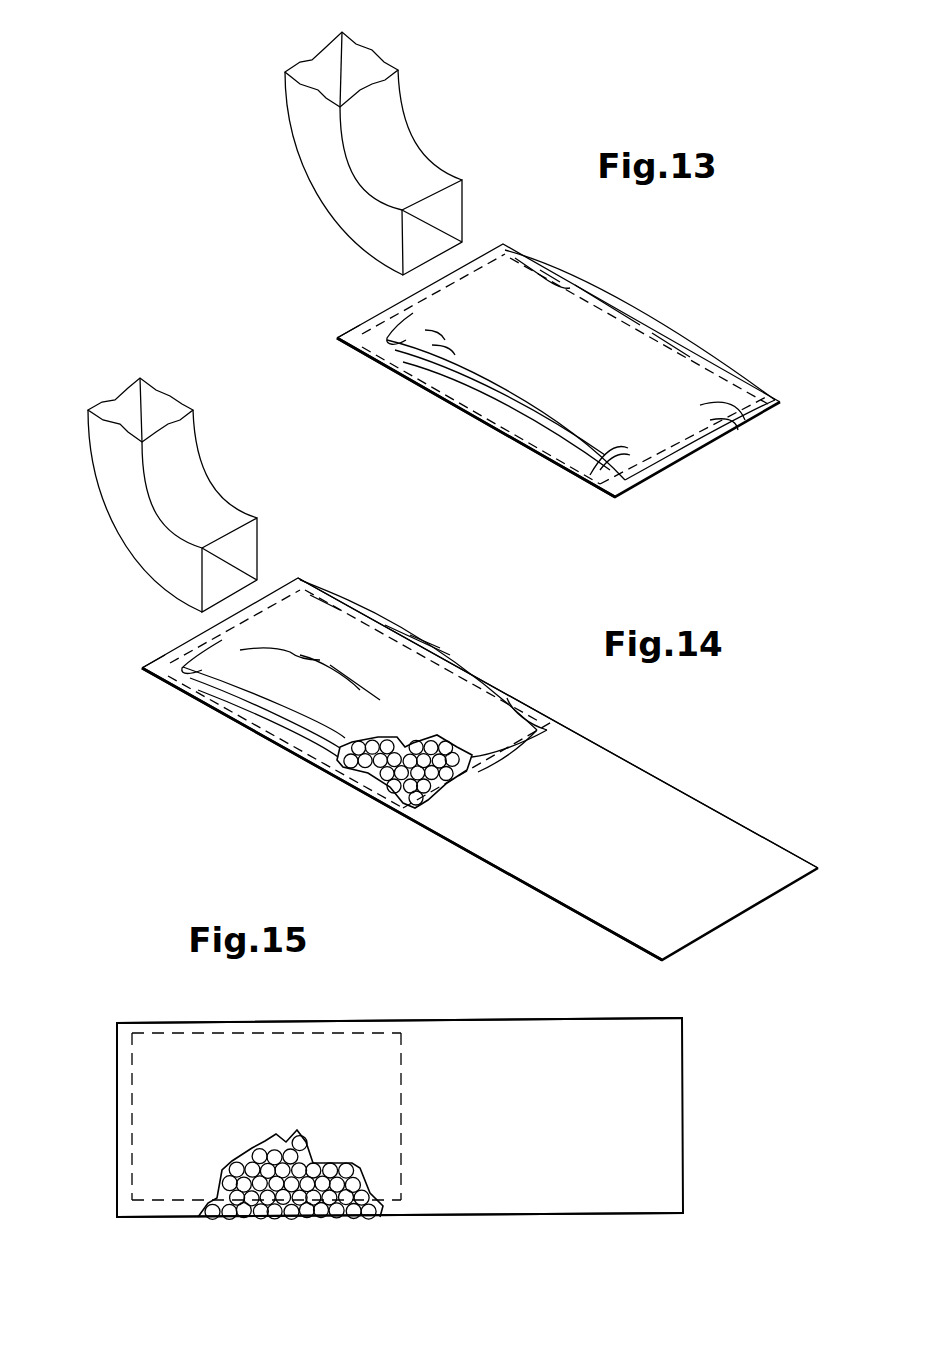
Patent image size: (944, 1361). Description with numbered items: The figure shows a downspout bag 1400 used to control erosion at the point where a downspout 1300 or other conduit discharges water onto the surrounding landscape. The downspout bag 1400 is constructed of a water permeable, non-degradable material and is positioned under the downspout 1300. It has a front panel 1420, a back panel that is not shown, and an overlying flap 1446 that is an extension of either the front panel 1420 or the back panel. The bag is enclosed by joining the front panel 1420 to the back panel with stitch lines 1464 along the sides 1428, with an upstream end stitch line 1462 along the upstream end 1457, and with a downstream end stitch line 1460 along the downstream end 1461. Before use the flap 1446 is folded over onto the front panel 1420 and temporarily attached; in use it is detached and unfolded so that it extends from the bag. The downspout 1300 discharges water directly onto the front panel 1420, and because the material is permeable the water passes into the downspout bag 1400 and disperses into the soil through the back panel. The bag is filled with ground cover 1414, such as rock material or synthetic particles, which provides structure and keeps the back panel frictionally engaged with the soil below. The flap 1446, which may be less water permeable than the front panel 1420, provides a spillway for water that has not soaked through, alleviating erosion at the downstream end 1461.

In FIG. 13, the downspout 1300 is at (373, 50).
In FIG. 14, the downspout 1300 is at (162, 393).
In FIG. 13, the downspout bag 1400 is at (557, 360).
In FIG. 14, the downspout bag 1400 is at (426, 763).
In FIG. 15, the downspout bag 1400 is at (412, 1118).
In FIG. 13, the overlying flap 1446 is at (563, 313).
In FIG. 14, the overlying flap 1446 is at (687, 832).
In FIG. 15, the overlying flap 1446 is at (650, 1098).
In FIG. 13, the sides 1428 is at (412, 382).
In FIG. 14, the sides 1428 is at (190, 704).
In FIG. 15, the sides 1428 is at (150, 1017).
In FIG. 13, the upstream end 1457 is at (357, 325).
In FIG. 14, the upstream end 1457 is at (152, 660).
In FIG. 15, the upstream end 1457 is at (116, 1078).
In FIG. 13, the upstream end stitch line 1462 is at (413, 313).
In FIG. 14, the upstream end stitch line 1462 is at (222, 640).
In FIG. 15, the upstream end stitch line 1462 is at (131, 1165).
In FIG. 13, the stitch lines 1464 is at (483, 403).
In FIG. 14, the stitch lines 1464 is at (265, 722).
In FIG. 15, the stitch lines 1464 is at (313, 1033).
In FIG. 13, the downstream end stitch line 1460 is at (738, 418).
In FIG. 14, the downstream end stitch line 1460 is at (527, 746).
In FIG. 15, the downstream end stitch line 1460 is at (402, 1113).
In FIG. 13, the downstream end 1461 is at (770, 414).
In FIG. 14, the downstream end 1461 is at (490, 757).
In FIG. 13, the front panel 1420 is at (545, 421).
In FIG. 14, the front panel 1420 is at (365, 650).
In FIG. 14, the ground cover 1414 is at (385, 780).
In FIG. 15, the ground cover 1414 is at (334, 1197).